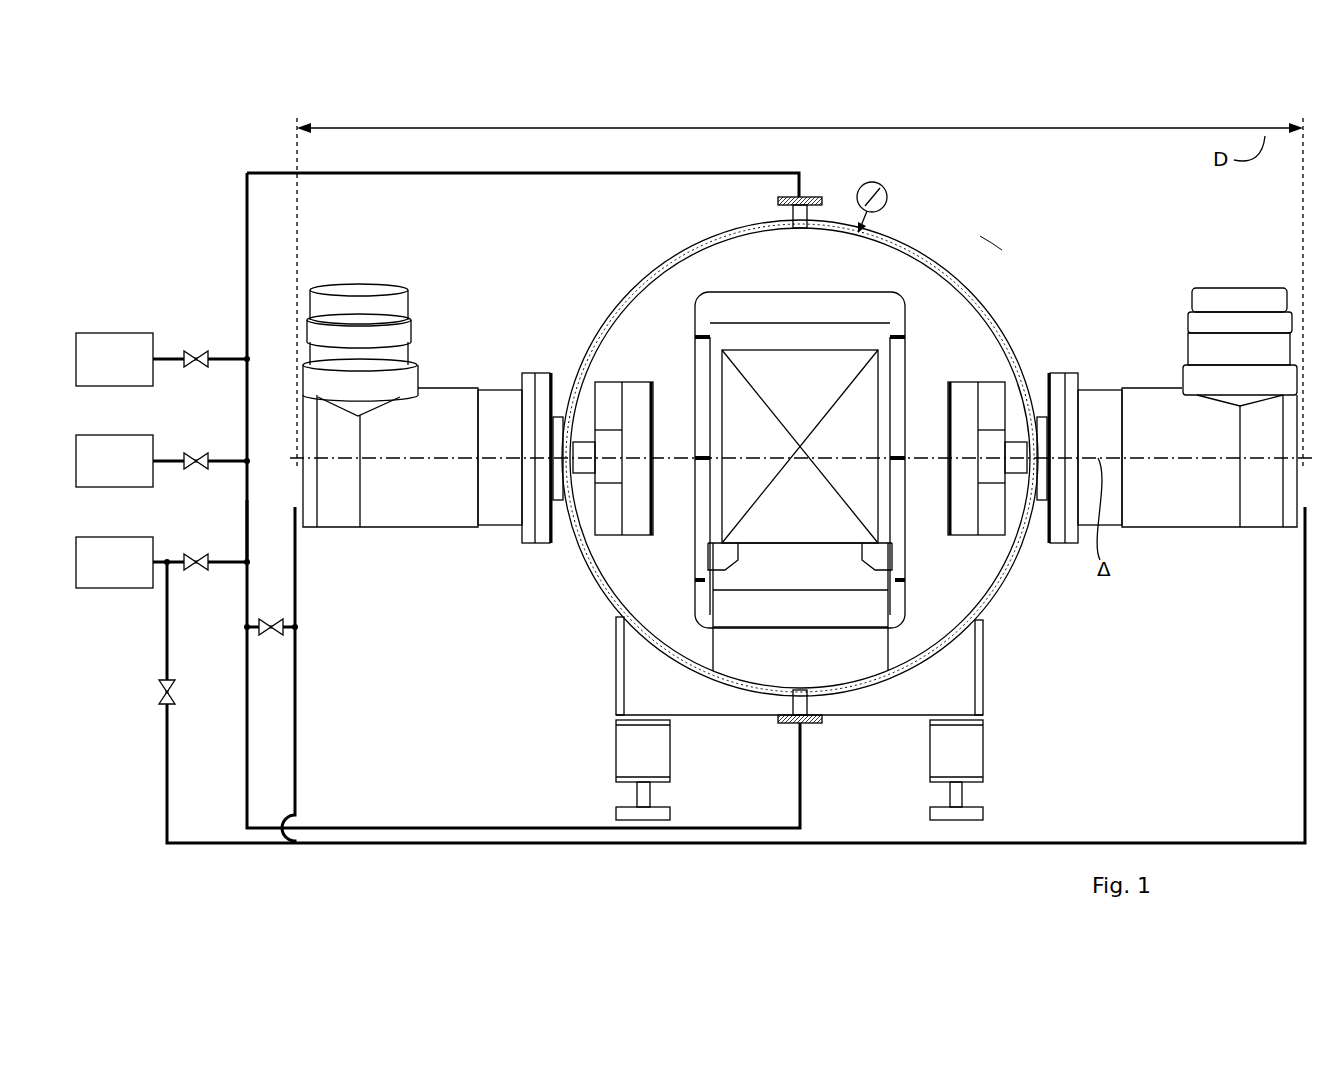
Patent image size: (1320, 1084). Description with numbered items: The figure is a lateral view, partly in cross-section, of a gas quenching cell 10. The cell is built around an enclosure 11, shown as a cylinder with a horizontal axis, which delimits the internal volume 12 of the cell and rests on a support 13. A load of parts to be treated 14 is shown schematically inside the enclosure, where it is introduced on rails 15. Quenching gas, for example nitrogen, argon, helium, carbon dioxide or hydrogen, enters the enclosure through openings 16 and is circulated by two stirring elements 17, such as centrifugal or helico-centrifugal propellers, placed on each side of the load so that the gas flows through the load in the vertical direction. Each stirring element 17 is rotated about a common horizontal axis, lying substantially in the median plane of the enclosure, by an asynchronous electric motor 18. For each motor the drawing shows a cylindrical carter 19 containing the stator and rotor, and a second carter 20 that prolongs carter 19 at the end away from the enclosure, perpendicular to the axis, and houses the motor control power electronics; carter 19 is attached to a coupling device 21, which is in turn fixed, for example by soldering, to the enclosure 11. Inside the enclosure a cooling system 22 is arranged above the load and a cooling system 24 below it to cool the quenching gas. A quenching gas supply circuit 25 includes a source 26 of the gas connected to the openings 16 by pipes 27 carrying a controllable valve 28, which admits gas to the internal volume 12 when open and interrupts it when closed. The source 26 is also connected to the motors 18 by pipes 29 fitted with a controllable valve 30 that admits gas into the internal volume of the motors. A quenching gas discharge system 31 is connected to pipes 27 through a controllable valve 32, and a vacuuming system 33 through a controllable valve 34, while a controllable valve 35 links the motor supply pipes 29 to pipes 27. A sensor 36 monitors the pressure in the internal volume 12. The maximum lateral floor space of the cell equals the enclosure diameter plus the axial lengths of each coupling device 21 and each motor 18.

The gas quenching cell 10 is at (1044, 208).
The enclosure 11 is at (985, 333).
The internal volume 12 is at (915, 275).
The support 13 is at (962, 690).
The parts to be treated 14 is at (745, 408).
The rails 15 is at (725, 557).
The openings 16 is at (792, 212).
The stirring elements 17 is at (633, 402).
The electric motor 18 is at (506, 380).
The carter 19 is at (390, 515).
The carter 20 is at (330, 346).
The coupling device 21 is at (548, 376).
The cooling system 22 is at (760, 308).
The cooling system 24 is at (745, 615).
The quenching gas supply circuit 25 is at (244, 262).
The source of the quenching gas 26 is at (88, 588).
The pipes 27 is at (250, 532).
The controllable valve 28 is at (203, 571).
The pipes 29 is at (297, 720).
The controllable valve 30 is at (172, 690).
The quenching gas discharge system 31 is at (88, 487).
The controllable valve 32 is at (203, 470).
The vacuuming system 33 is at (88, 386).
The controllable valve 34 is at (203, 368).
The controllable valve 35 is at (278, 636).
The sensor 36 is at (887, 206).